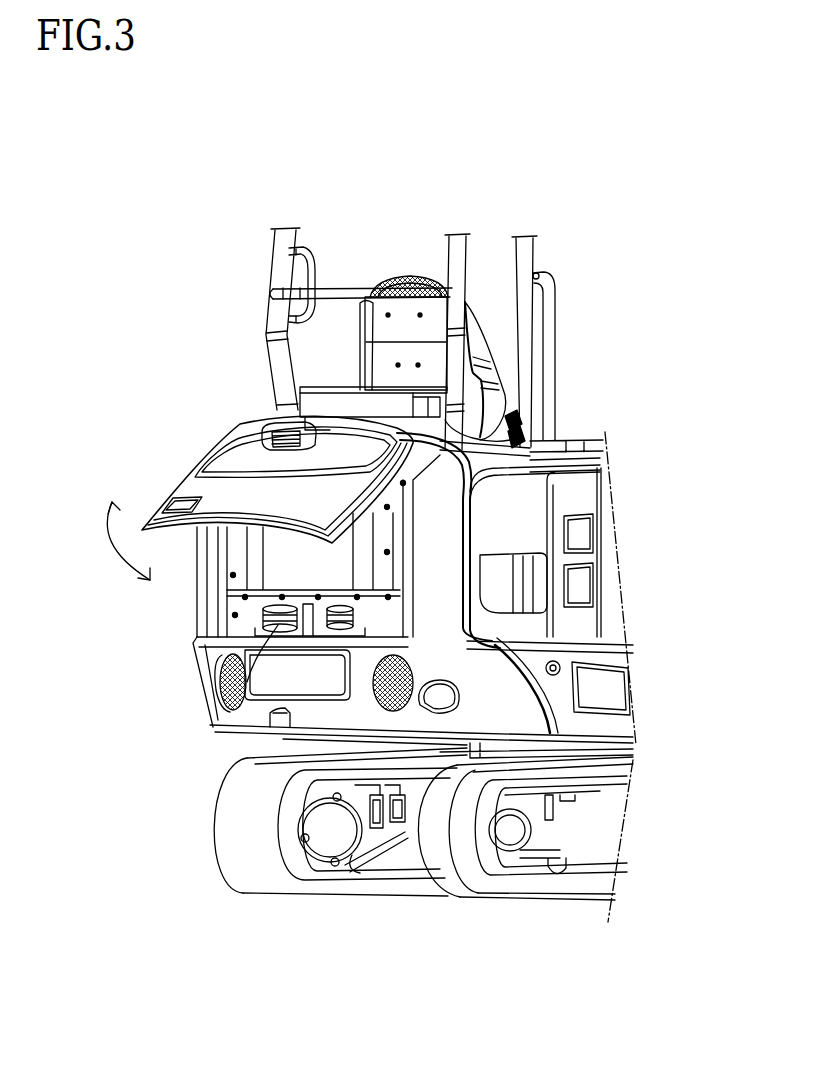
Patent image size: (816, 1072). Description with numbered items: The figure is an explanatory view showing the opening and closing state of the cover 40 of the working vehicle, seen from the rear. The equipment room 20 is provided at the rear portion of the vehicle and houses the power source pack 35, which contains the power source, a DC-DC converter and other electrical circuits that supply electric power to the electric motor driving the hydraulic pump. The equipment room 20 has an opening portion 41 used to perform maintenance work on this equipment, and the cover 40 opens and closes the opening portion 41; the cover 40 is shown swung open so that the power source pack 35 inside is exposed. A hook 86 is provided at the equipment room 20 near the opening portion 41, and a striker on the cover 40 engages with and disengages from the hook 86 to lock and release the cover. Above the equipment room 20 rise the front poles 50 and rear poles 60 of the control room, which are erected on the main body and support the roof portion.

The equipment room 20 is at (437, 543).
The power source pack 35 is at (308, 553).
The cover 40 is at (225, 493).
The opening portion 41 is at (467, 517).
The front pole 50 is at (527, 258).
The rear pole 60 is at (277, 267).
The hook 86 is at (222, 683).